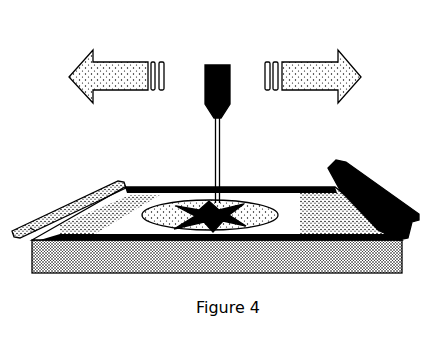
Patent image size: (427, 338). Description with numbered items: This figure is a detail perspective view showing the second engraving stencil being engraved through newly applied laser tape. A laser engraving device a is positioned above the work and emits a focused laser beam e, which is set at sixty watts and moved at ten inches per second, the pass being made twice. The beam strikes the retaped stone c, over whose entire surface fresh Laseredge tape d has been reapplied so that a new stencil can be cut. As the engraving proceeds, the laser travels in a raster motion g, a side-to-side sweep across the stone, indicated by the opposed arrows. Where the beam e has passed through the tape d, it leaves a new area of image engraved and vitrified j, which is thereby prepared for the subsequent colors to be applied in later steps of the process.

The laser engraving device a is at (230, 65).
The focused laser beam e is at (226, 195).
The new area of image engraved and vitrified j is at (165, 203).
The fresh Laseredge tape d is at (100, 176).
The raster motion of laser g is at (130, 63).
The retaped stone c is at (219, 210).